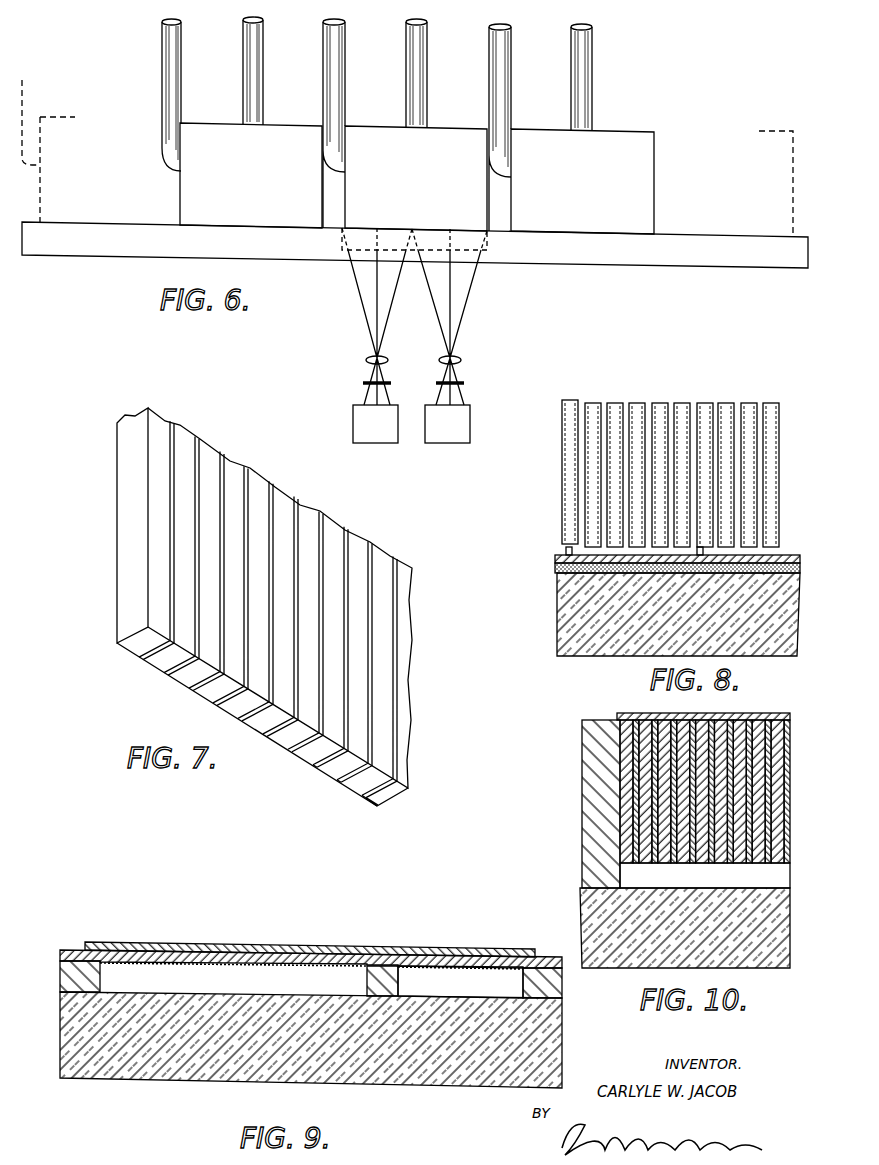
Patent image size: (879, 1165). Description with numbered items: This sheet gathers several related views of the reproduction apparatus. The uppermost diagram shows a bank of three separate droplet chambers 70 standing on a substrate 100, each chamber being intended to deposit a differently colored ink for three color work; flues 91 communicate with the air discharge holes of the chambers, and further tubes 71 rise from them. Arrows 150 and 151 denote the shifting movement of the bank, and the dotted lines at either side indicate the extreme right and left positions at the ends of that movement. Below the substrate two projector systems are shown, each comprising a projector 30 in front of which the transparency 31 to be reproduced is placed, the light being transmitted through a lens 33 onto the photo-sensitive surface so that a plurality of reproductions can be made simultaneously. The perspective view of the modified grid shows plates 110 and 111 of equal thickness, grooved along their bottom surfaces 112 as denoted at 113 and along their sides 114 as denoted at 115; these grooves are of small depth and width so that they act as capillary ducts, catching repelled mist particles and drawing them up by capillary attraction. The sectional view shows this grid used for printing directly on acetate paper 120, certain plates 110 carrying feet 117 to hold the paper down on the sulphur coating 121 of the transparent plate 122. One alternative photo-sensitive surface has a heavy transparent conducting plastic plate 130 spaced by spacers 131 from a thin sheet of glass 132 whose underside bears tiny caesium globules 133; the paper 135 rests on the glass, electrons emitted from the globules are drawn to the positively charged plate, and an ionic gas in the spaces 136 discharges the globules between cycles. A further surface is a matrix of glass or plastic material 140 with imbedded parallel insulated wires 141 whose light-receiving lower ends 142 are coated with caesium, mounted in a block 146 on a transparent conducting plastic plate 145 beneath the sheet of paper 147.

In FIG. 6, the projector 30 is at (378, 432).
In FIG. 6, the transparency 31 is at (364, 383).
In FIG. 6, the lens 33 is at (366, 357).
In FIG. 6, the droplet chamber 70 is at (208, 135).
In FIG. 6, the tube 71 is at (253, 83).
In FIG. 6, the flue 91 is at (175, 77).
In FIG. 6, the substrate 100 is at (597, 257).
In FIG. 8, the plate 110 is at (572, 440).
In FIG. 8, the plate 111 is at (594, 404).
In FIG. 7, the bottom surface 112 is at (389, 791).
In FIG. 7, the groove 113 is at (367, 797).
In FIG. 7, the side 114 is at (403, 627).
In FIG. 7, the groove 115 is at (396, 707).
In FIG. 8, the foot 117 is at (565, 549).
In FIG. 8, the acetate paper 120 is at (784, 559).
In FIG. 8, the sulphur coating 121 is at (558, 567).
In FIG. 8, the transparent plate 122 is at (637, 642).
In FIG. 9, the transparent conducting plastic plate 130 is at (328, 1076).
In FIG. 9, the spacer 131 is at (78, 976).
In FIG. 9, the thin sheet of glass 132 is at (78, 953).
In FIG. 9, the globules of photoemitting material 133 is at (148, 965).
In FIG. 9, the sheet of paper 135 is at (322, 948).
In FIG. 9, the space 136 is at (463, 983).
In FIG. 10, the glass or plastic material 140 is at (757, 718).
In FIG. 10, the insulated wires 141 is at (670, 778).
In FIG. 10, the lower ends of the wires 142 is at (627, 865).
In FIG. 10, the transparent conducting plastic plate 145 is at (760, 955).
In FIG. 10, the block 146 is at (596, 748).
In FIG. 10, the sheet of paper 147 is at (623, 713).
In FIG. 6, the arrow 150 is at (48, 168).
In FIG. 6, the arrow 151 is at (770, 181).